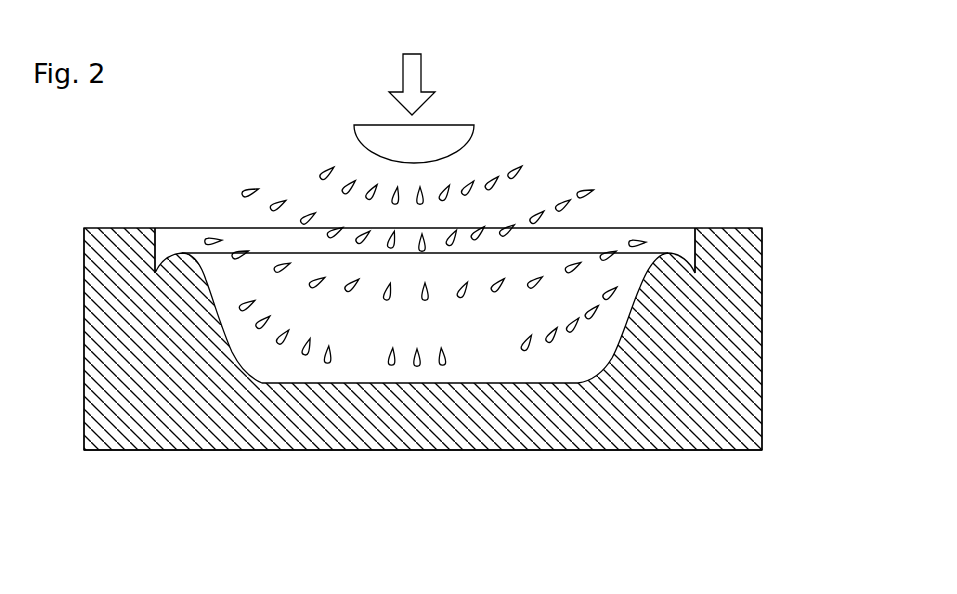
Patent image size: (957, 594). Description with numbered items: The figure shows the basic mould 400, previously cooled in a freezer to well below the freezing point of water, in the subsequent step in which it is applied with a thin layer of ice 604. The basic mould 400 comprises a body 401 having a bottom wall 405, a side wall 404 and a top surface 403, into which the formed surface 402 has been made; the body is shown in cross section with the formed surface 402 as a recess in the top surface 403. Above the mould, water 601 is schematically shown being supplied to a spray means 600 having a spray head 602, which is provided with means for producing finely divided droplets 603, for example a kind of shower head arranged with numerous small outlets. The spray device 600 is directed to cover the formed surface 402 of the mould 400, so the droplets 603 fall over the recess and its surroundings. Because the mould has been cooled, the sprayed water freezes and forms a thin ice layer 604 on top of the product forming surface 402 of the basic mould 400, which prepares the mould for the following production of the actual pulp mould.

The basic mould half 400 is at (72, 504).
The body 401 is at (728, 437).
The formed surface 402 is at (337, 383).
The top surface 403 is at (113, 228).
The side wall 404 is at (84, 320).
The bottom wall 405 is at (593, 451).
The spray means 600 is at (528, 85).
The water 601 is at (410, 79).
The spray head 602 is at (362, 133).
The finely divided droplets 603 is at (588, 190).
The thin layer of ice 604 is at (465, 383).